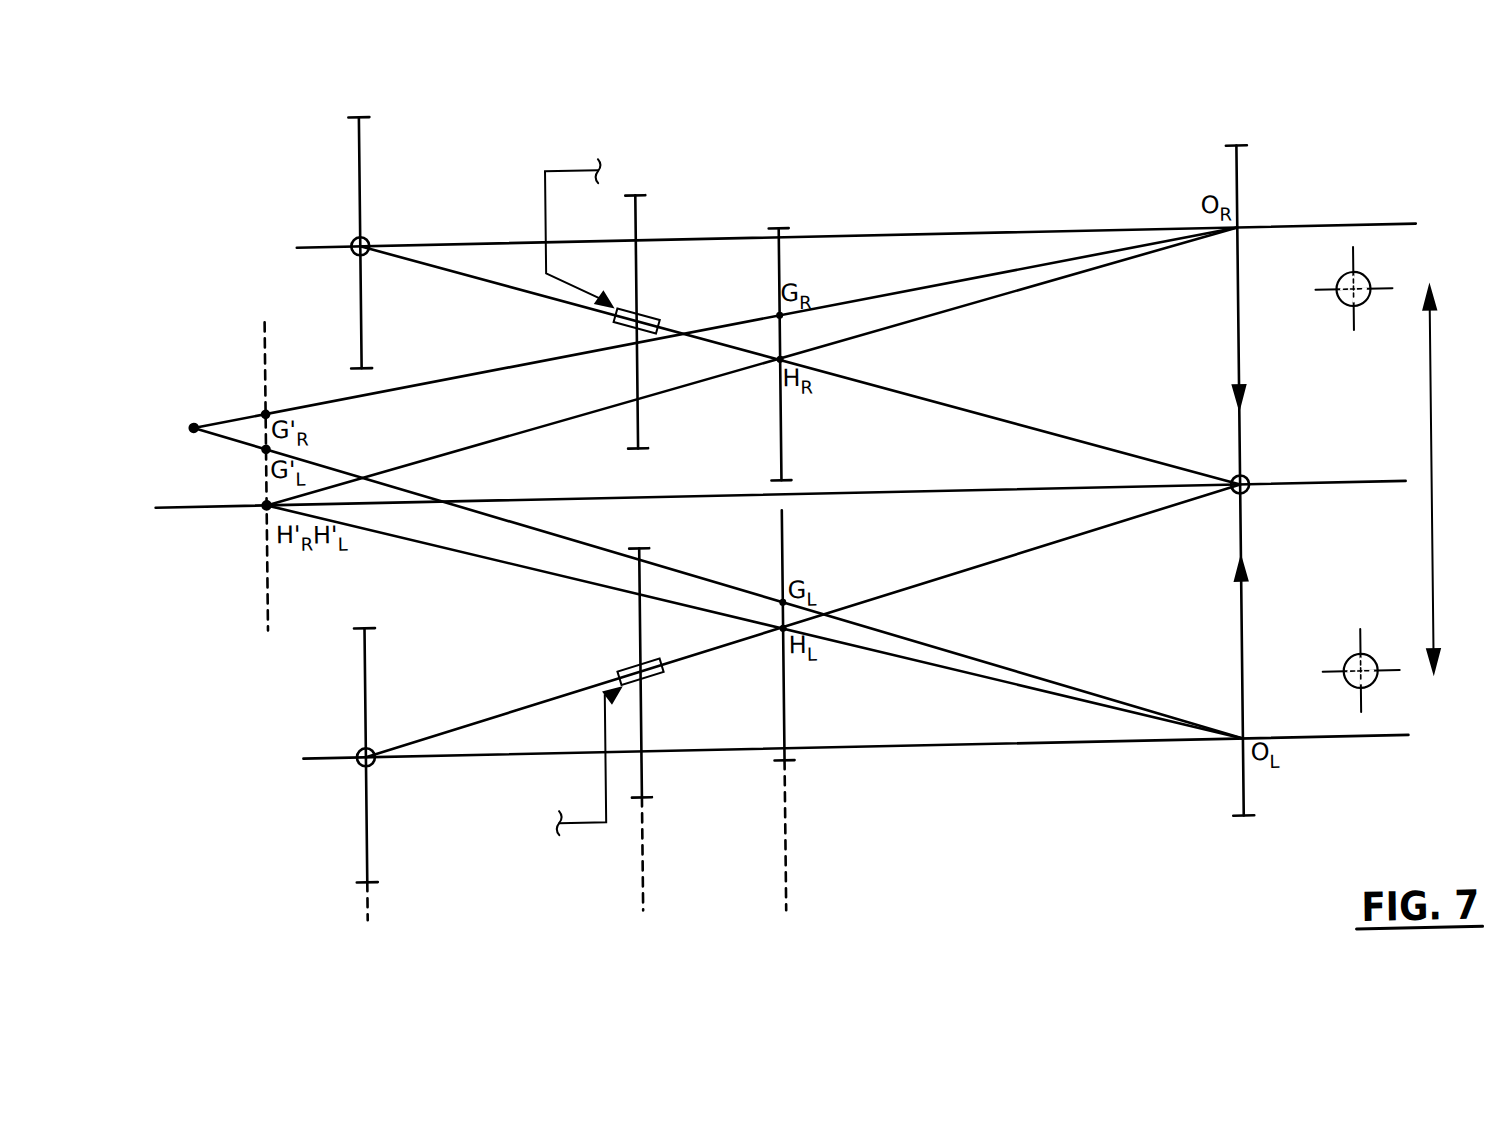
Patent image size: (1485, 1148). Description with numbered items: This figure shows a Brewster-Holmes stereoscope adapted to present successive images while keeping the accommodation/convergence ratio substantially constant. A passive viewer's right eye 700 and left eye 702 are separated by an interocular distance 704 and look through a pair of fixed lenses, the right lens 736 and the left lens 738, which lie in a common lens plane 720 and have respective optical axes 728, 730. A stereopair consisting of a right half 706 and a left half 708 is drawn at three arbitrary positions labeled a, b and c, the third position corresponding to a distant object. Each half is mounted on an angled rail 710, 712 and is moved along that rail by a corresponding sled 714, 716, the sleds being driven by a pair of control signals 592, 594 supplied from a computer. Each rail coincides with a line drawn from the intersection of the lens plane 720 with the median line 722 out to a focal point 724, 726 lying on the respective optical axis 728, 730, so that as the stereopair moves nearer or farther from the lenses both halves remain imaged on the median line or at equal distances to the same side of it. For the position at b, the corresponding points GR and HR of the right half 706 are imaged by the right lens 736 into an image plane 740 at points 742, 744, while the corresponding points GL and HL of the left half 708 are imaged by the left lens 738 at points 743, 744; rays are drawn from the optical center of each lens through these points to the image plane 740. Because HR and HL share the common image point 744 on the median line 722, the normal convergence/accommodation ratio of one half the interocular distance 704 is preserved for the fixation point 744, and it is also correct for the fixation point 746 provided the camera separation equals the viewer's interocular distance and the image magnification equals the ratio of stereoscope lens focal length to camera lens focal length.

The control signal 592 is at (543, 182).
The control signal 594 is at (556, 847).
The right eye 700 is at (1360, 332).
The left eye 702 is at (1365, 713).
The interocular distance 704 is at (1427, 556).
The right half of stereopair 706 is at (358, 186).
The left half of stereopair 708 is at (362, 856).
The angled rail 710 is at (936, 425).
The angled rail 712 is at (958, 593).
The sled 714 is at (652, 332).
The sled 716 is at (650, 676).
The lens plane 720 is at (1236, 472).
The median line 722 is at (565, 508).
The focal point 724 is at (362, 246).
The focal point 726 is at (352, 776).
The optical axis 728 is at (1101, 254).
The optical axis 730 is at (1130, 770).
The right lens 736 is at (1236, 225).
The left lens 738 is at (1233, 707).
The image plane 740 is at (260, 581).
The image point 742 is at (264, 418).
The image point 743 is at (261, 458).
The fixation point 744 is at (261, 514).
The fixation point 746 is at (189, 429).